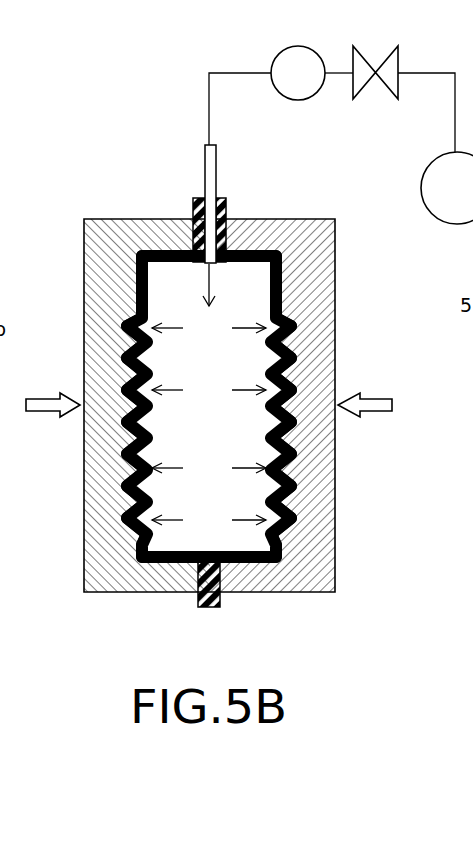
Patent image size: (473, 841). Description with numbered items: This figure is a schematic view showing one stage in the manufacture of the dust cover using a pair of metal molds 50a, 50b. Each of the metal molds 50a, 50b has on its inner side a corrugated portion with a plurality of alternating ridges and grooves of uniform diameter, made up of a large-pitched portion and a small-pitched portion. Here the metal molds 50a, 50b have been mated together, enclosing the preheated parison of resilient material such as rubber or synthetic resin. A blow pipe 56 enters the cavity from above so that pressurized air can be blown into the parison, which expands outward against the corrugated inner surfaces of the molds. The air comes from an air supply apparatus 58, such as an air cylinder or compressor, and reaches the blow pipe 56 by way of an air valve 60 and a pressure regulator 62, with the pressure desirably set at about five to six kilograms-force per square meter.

The metal mold 50a is at (98, 286).
The metal mold 50b is at (325, 342).
The blow pipe 56 is at (208, 162).
The air supply apparatus 58 is at (437, 216).
The air valve 60 is at (391, 96).
The pressure regulator 62 is at (298, 100).